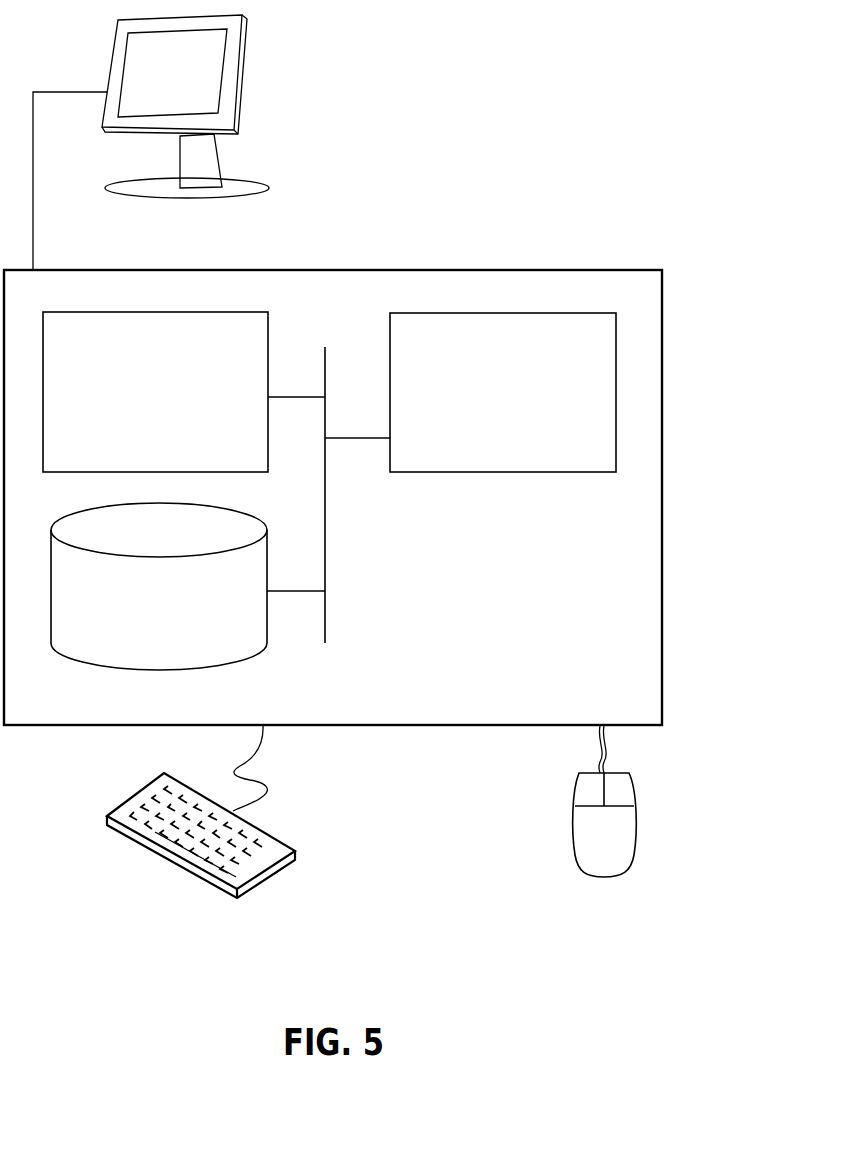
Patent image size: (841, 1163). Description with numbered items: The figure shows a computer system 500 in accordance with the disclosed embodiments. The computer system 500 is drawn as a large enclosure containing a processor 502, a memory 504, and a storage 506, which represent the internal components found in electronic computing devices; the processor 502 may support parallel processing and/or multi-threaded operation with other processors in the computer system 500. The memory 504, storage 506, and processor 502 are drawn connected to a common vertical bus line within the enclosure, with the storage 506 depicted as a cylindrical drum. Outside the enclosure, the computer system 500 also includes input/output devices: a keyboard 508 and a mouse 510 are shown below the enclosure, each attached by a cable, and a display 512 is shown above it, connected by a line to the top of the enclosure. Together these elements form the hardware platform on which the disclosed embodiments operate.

The computer system 500 is at (379, 248).
The processor 502 is at (528, 406).
The memory 504 is at (178, 404).
The storage 506 is at (184, 617).
The keyboard 508 is at (125, 835).
The mouse 510 is at (624, 848).
The display 512 is at (151, 142).